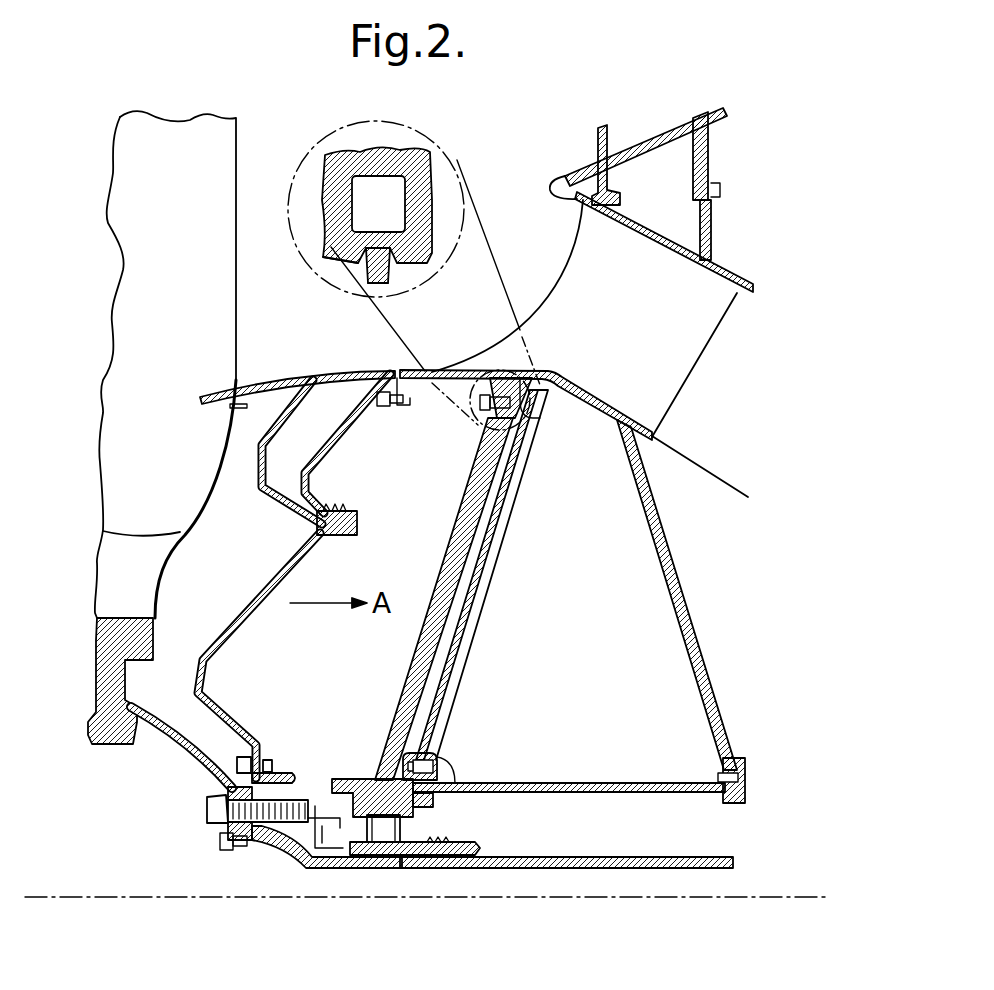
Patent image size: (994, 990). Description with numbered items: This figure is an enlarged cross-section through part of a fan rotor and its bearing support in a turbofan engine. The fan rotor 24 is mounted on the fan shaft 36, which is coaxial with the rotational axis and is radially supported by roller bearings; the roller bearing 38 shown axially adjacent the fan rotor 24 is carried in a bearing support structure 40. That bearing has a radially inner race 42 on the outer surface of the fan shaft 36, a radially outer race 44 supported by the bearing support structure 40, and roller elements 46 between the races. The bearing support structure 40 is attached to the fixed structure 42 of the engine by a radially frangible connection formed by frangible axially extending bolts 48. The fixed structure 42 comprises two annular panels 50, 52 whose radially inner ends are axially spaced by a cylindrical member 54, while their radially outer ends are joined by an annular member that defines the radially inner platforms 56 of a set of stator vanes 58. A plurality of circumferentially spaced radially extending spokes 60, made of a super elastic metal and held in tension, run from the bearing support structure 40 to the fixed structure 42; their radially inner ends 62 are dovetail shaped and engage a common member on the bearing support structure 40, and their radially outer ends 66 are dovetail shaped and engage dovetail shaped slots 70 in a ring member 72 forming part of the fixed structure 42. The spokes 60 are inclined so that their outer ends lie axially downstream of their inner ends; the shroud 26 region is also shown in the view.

The fan rotor 24 is at (152, 628).
The shroud ring 26 is at (218, 360).
The fan shaft 36 is at (180, 747).
The roller bearing 38 is at (393, 857).
The bearing support structure 40 is at (369, 772).
The fixed structure 42 is at (702, 638).
The radially outer race 44 is at (356, 780).
The roller elements 46 is at (343, 848).
The frangible axially extending bolts 48 is at (437, 760).
The annular panel 50 is at (500, 557).
The annular panel 52 is at (718, 688).
The cylindrical member 54 is at (615, 783).
The radially inner platforms 56 is at (605, 410).
The stator vanes 58 is at (687, 340).
The radially extending spokes 60 is at (445, 613).
The radially inner ends 62 is at (390, 758).
The radially outer ends 66 is at (388, 243).
The dovetail shaped slots 70 is at (345, 250).
The ring member 72 is at (418, 170).